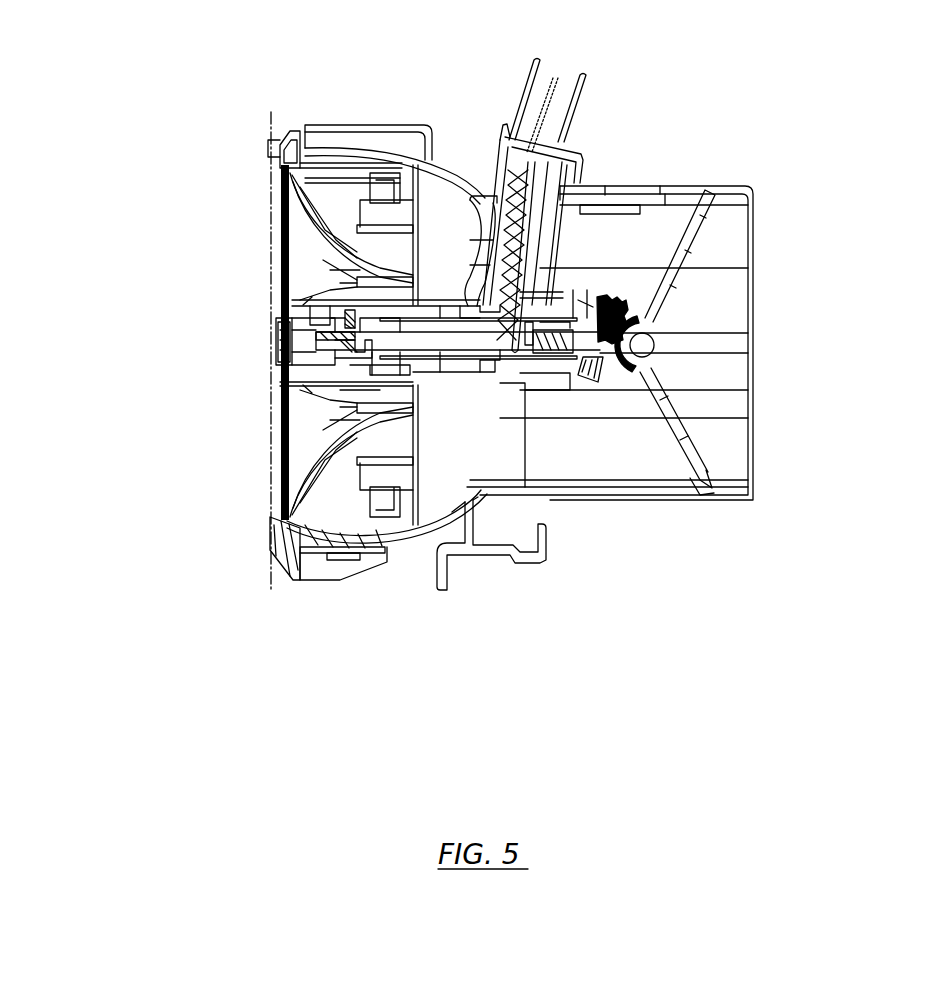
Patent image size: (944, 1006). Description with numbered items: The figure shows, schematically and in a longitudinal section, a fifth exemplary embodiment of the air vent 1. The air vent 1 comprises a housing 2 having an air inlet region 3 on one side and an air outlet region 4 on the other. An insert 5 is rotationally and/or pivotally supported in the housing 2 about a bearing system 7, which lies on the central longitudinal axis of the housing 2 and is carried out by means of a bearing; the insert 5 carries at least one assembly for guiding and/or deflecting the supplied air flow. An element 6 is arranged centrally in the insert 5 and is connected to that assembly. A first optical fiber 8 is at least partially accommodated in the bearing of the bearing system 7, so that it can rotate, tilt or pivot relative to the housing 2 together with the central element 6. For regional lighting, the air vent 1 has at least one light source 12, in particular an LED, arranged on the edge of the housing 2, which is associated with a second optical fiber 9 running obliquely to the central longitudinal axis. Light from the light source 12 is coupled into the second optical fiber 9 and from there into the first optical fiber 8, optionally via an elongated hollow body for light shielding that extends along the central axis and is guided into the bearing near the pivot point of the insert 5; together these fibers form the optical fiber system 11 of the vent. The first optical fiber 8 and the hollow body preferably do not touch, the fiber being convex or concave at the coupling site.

The air vent 1 is at (408, 25).
The housing 2 is at (388, 133).
The air inlet region 3 is at (762, 288).
The air outlet region 4 is at (240, 249).
The insert 5 is at (250, 343).
The element 6 is at (358, 318).
The bearing system 7 is at (357, 315).
The first optical fiber 8 is at (367, 343).
The second optical fiber 9 is at (498, 306).
The optical fiber system 11 is at (322, 158).
The light source 12 is at (553, 165).